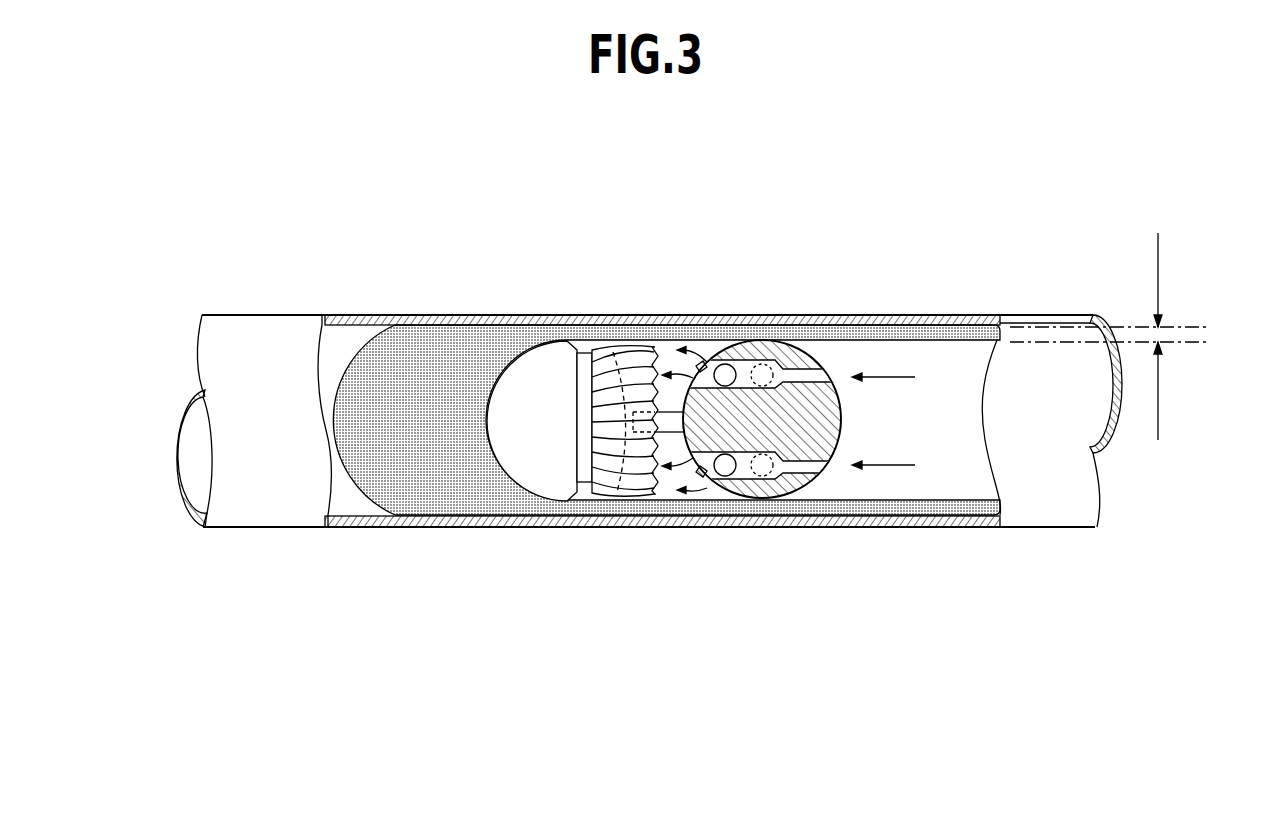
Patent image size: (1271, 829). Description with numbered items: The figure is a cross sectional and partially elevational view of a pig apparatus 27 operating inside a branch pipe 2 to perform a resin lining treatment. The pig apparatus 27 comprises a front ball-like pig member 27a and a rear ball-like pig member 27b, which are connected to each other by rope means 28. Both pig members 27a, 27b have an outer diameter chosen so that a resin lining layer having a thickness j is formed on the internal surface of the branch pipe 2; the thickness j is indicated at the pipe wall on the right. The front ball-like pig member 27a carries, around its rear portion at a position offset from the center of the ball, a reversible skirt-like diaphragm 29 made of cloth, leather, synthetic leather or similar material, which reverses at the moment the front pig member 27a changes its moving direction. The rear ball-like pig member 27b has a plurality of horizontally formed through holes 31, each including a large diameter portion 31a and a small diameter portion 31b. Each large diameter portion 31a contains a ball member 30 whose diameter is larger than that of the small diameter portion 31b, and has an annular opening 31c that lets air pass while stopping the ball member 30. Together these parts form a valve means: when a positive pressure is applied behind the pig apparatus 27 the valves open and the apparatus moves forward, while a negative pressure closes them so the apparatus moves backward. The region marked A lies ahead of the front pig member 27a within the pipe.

The branch pipe 2 is at (856, 313).
The pig apparatus 27 is at (778, 305).
The front ball-like pig member 27a is at (498, 453).
The rear ball-like pig member 27b is at (841, 442).
The rope means 28 is at (624, 498).
The reversible skirt-like diaphragm 29 is at (618, 497).
The ball member 30 is at (738, 497).
The through hole 31 is at (777, 477).
The large diameter portion 31a is at (747, 480).
The small diameter portion 31b is at (836, 432).
The annular opening 31c is at (693, 460).
The chamber A is at (400, 353).
The thickness j is at (1116, 336).